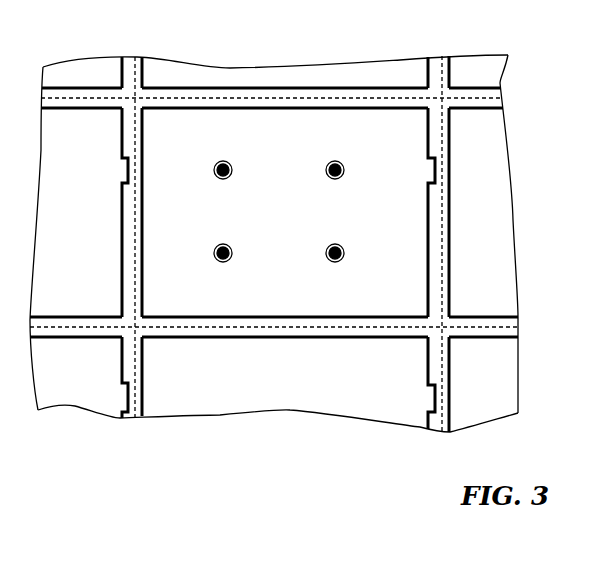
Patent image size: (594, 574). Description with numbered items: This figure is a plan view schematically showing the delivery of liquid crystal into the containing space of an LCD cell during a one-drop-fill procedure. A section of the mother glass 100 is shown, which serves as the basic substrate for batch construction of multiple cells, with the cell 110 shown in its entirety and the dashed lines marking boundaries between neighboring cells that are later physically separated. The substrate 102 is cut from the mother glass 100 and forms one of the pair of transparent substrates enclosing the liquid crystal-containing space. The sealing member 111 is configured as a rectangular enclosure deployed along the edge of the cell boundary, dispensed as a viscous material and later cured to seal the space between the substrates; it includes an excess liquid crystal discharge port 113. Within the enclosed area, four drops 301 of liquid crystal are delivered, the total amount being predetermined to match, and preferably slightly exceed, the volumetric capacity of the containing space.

The mother glass 100 is at (50, 410).
The substrate 102 is at (275, 253).
The LCD cell 110 is at (192, 285).
The sealing member 111 is at (305, 318).
The excess liquid crystal discharge port 113 is at (435, 173).
The drop of liquid crystal 301 is at (231, 245).